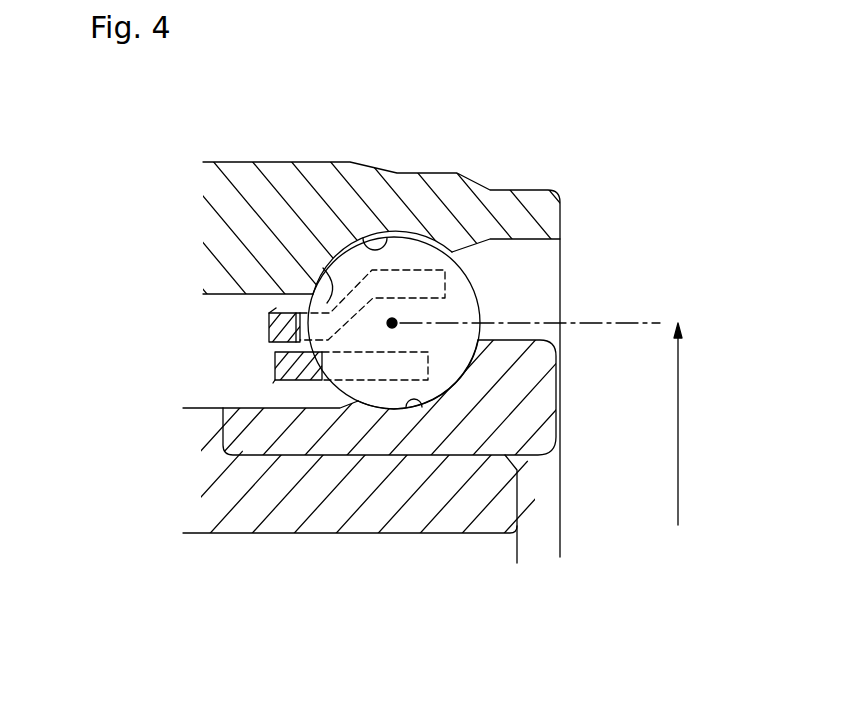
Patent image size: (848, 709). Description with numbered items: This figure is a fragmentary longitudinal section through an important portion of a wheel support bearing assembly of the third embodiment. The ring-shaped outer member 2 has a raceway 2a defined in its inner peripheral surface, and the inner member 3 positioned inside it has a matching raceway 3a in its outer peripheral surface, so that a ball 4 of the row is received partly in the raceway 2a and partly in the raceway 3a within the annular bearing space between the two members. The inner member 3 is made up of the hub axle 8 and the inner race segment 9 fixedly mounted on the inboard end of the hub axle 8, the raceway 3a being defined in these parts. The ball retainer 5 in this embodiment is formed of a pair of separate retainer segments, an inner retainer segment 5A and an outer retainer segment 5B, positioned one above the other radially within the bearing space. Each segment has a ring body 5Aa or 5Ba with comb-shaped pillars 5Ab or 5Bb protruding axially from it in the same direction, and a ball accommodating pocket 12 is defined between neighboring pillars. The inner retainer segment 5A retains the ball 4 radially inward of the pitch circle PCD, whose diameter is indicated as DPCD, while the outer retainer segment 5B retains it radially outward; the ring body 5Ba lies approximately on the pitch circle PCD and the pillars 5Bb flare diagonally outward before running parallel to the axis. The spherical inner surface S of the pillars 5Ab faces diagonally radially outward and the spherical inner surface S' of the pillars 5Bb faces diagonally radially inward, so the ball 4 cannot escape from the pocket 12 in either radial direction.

The outer member 2 is at (310, 190).
The raceway 2a is at (398, 232).
The ball accommodating pocket 12 is at (276, 308).
The ball 4 is at (468, 313).
The pitch circle PCD is at (394, 320).
The pitch circle diameter dimension DPCD is at (718, 424).
The inner member 3 is at (414, 506).
The raceway 3a is at (422, 414).
The hub axle 8 is at (217, 510).
The inner race segment 9 is at (327, 440).
The ball retainer 5 is at (182, 352).
The inner retainer segment 5A is at (265, 373).
The ring body 5Aa is at (273, 383).
The pillar 5Ab is at (415, 370).
The outer retainer segment 5B is at (257, 331).
The ring body 5Ba is at (266, 300).
The pillar 5Bb is at (447, 286).
The spherical inner surface S is at (370, 490).
The spherical inner surface S' is at (500, 204).